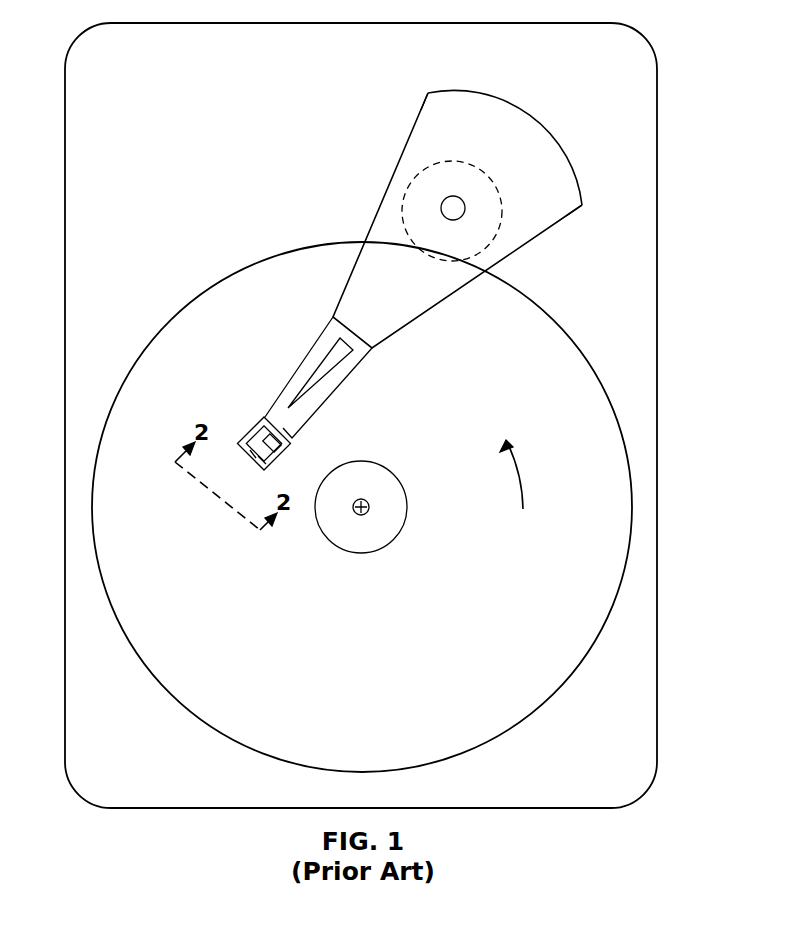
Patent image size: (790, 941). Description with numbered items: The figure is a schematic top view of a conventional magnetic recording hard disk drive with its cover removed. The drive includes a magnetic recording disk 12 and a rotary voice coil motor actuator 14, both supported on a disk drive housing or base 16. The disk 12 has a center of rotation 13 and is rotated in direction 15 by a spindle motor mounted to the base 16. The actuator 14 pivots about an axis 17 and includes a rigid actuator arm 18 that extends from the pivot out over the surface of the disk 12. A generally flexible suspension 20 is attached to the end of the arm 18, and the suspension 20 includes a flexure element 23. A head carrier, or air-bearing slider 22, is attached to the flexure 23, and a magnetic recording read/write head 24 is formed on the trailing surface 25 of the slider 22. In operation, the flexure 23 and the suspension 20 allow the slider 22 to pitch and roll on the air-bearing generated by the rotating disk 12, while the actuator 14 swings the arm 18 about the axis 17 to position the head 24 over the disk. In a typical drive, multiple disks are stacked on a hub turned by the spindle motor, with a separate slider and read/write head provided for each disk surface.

The magnetic recording disk 12 is at (372, 701).
The center of rotation 13 is at (370, 506).
The rotary voice coil motor actuator 14 is at (533, 112).
The direction of rotation 15 is at (525, 478).
The disk drive housing or base 16 is at (565, 23).
The pivot axis 17 is at (441, 207).
The rigid actuator arm 18 is at (350, 278).
The suspension 20 is at (325, 343).
The air-bearing slider 22 is at (257, 422).
The flexure element 23 is at (278, 450).
The magnetic recording read/write head 24 is at (265, 470).
The trailing surface 25 is at (245, 450).